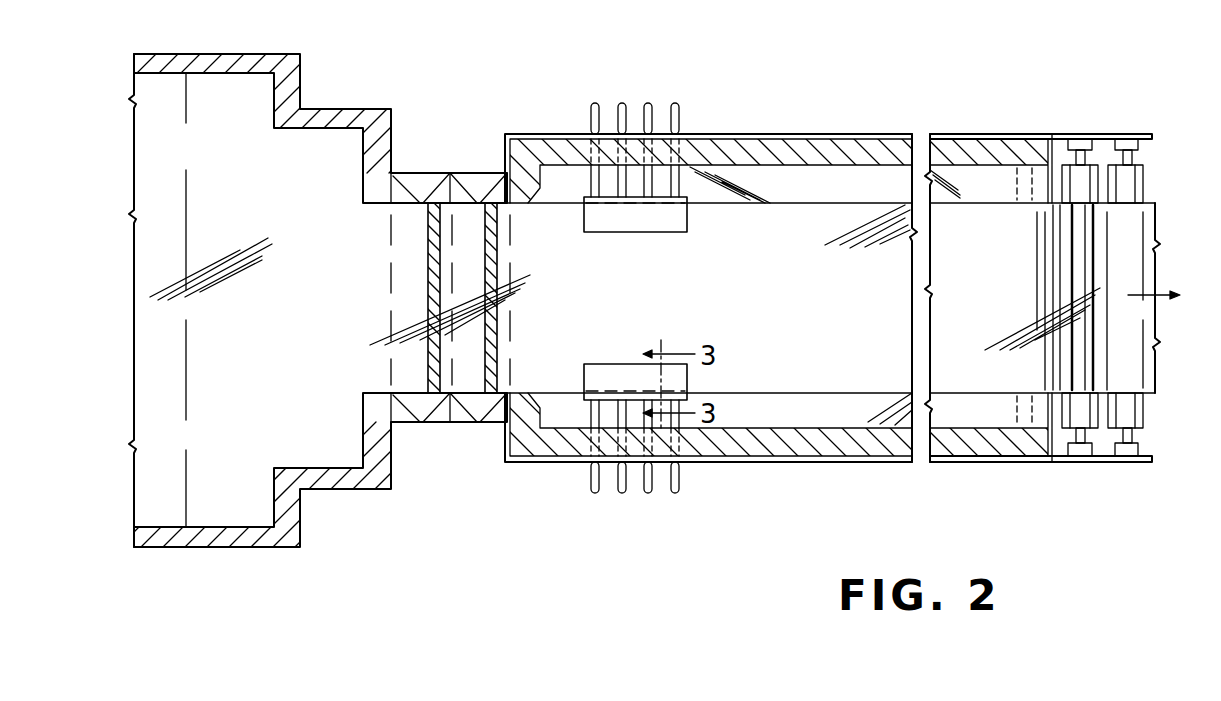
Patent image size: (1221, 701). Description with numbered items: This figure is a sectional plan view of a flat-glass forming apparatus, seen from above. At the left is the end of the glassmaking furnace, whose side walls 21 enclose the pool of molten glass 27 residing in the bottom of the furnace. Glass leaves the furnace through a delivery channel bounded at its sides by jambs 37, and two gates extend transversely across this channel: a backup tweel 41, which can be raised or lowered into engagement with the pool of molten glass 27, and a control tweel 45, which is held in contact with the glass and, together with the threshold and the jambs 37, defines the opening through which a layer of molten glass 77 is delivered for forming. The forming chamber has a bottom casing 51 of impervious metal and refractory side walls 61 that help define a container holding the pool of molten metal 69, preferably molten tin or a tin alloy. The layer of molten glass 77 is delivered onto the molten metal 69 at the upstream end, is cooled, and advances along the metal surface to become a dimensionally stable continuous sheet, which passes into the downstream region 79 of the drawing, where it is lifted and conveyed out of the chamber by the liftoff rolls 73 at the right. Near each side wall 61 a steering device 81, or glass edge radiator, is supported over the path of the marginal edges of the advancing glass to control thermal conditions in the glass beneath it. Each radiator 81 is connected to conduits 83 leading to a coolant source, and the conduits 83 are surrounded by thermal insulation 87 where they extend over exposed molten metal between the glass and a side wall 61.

The side walls 21 is at (210, 54).
The pool of molten glass 27 is at (274, 341).
The jambs 37 is at (486, 173).
The backup tweel 41 is at (428, 262).
The control tweel 45 is at (497, 257).
The bottom casing 51 is at (788, 134).
The refractory side walls 61 is at (852, 140).
The pool of molten metal 69 is at (800, 421).
The liftoff rolls 73 is at (1143, 183).
The layer of molten glass 77 is at (566, 326).
The outlet chamber 79 is at (995, 297).
The steering device 81 is at (687, 225).
The conduits 83 is at (680, 110).
The thermal insulation 87 is at (597, 180).